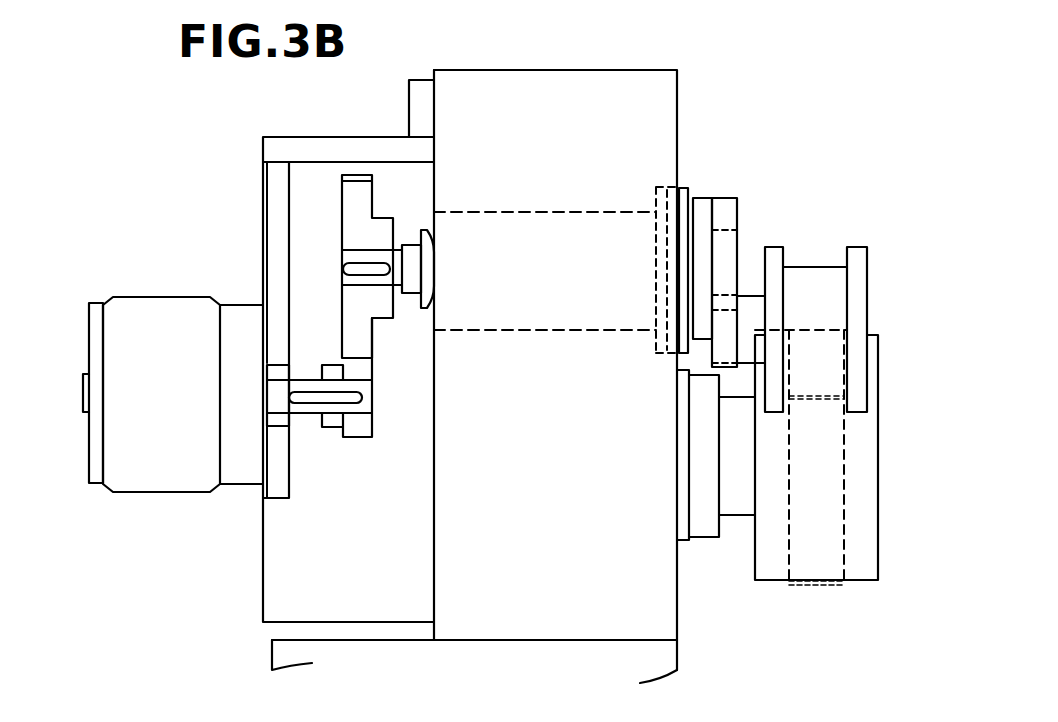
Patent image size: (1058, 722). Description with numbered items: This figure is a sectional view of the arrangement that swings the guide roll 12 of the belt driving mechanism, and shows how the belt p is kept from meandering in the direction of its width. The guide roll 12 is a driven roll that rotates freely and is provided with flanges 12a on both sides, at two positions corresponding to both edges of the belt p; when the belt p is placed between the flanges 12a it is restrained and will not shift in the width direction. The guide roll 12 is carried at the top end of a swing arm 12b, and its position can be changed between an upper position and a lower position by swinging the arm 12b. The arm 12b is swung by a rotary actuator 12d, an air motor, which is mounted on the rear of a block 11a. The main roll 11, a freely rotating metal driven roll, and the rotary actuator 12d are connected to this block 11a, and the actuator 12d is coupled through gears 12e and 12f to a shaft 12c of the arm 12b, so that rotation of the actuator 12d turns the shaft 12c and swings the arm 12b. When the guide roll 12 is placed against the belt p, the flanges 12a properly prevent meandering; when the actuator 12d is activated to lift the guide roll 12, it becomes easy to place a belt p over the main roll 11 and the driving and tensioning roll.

The main roll 11 is at (858, 582).
The block 11a is at (498, 69).
The guide roll 12 is at (807, 266).
The flanges 12a is at (845, 267).
The swing arm 12b is at (740, 255).
The shaft 12c is at (605, 212).
The rotary actuator 12d is at (158, 493).
The gear 12e is at (350, 438).
The gear 12f is at (342, 200).
The belt p is at (805, 585).